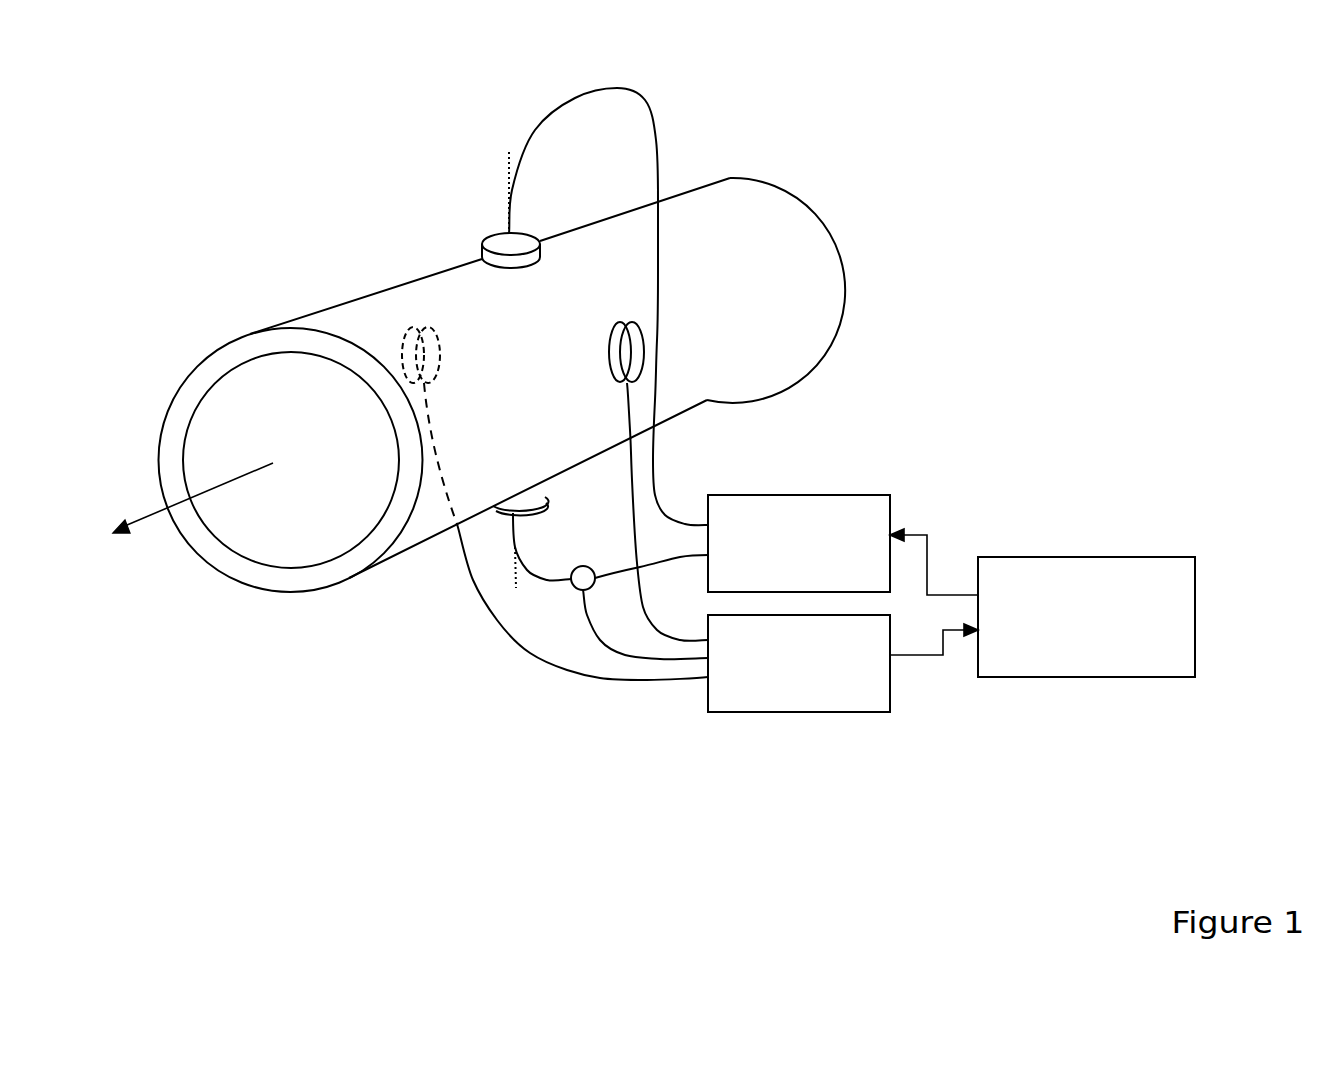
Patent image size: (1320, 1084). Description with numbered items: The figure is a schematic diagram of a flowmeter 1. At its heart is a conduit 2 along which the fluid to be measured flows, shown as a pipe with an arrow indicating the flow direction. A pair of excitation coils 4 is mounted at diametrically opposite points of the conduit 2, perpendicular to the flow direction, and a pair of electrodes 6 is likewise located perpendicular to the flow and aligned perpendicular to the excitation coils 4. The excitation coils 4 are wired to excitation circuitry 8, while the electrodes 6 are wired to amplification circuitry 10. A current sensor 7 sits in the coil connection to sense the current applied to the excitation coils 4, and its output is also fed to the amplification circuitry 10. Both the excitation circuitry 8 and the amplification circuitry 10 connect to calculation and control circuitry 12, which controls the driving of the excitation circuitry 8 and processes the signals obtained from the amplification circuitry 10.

The flowmeter 1 is at (654, 486).
The conduit 2 is at (292, 538).
The excitation coils 4 is at (482, 246).
The electrodes 6 is at (610, 346).
The current sensor 7 is at (575, 589).
The excitation circuitry 8 is at (847, 495).
The amplification circuitry 10 is at (803, 712).
The calculation and control circuitry 12 is at (1082, 677).